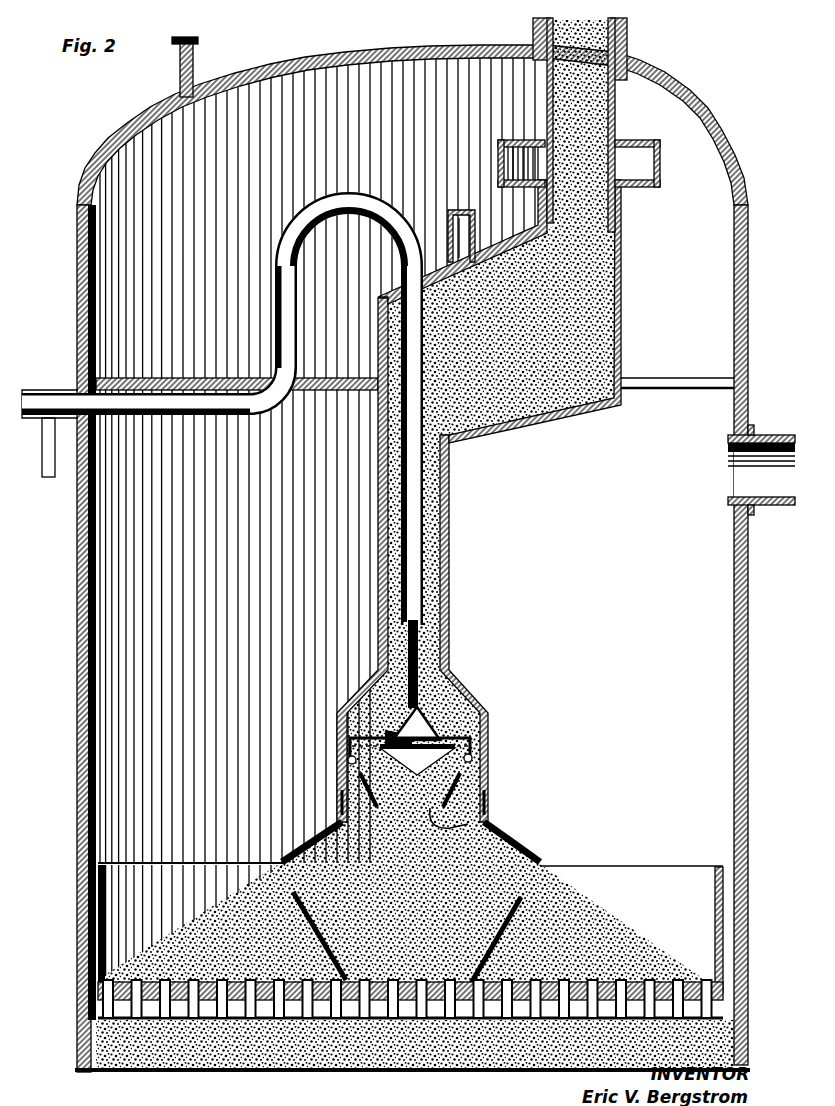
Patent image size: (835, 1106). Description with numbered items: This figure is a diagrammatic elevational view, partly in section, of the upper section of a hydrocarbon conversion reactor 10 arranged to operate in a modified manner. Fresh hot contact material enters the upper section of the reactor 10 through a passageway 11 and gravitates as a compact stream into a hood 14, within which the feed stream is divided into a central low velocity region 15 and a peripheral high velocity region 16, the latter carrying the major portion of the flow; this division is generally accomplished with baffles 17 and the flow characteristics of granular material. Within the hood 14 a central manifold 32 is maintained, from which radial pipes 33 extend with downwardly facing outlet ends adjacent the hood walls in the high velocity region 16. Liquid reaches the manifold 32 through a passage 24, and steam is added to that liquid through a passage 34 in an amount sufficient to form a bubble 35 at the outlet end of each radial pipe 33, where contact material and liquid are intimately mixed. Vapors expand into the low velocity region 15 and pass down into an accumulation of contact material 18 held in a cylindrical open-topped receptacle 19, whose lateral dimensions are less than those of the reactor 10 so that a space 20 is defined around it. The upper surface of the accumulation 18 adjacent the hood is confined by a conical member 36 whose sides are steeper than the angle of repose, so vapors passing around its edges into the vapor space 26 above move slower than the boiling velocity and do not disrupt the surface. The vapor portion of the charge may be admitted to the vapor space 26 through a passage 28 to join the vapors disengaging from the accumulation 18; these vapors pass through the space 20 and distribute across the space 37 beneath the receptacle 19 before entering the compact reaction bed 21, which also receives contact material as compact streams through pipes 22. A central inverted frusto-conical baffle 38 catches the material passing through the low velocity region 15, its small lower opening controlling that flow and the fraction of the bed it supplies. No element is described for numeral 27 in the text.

The conversion reactor 10 is at (77, 650).
The passageway 11 is at (630, 52).
The hood 14 is at (447, 683).
The central low velocity region 15 is at (470, 822).
The peripheral high velocity region 16 is at (488, 800).
The baffles 17 is at (345, 795).
The accumulation of contact material 18 is at (588, 920).
The receptacle 19 is at (723, 900).
The space 20 is at (78, 913).
The compact reaction bed 21 is at (722, 1056).
The pipes 22 is at (700, 1017).
The passage 24 is at (266, 410).
The vapor space 26 is at (92, 774).
The slots 27 is at (490, 782).
The passage 28 is at (764, 506).
The central manifold 32 is at (440, 716).
The radial pipes 33 is at (345, 738).
The passage 34 is at (66, 462).
The bubble 35 is at (348, 762).
The conical member 36 is at (525, 850).
The space 37 is at (100, 1004).
The inverted frusto-conical baffle 38 is at (528, 895).